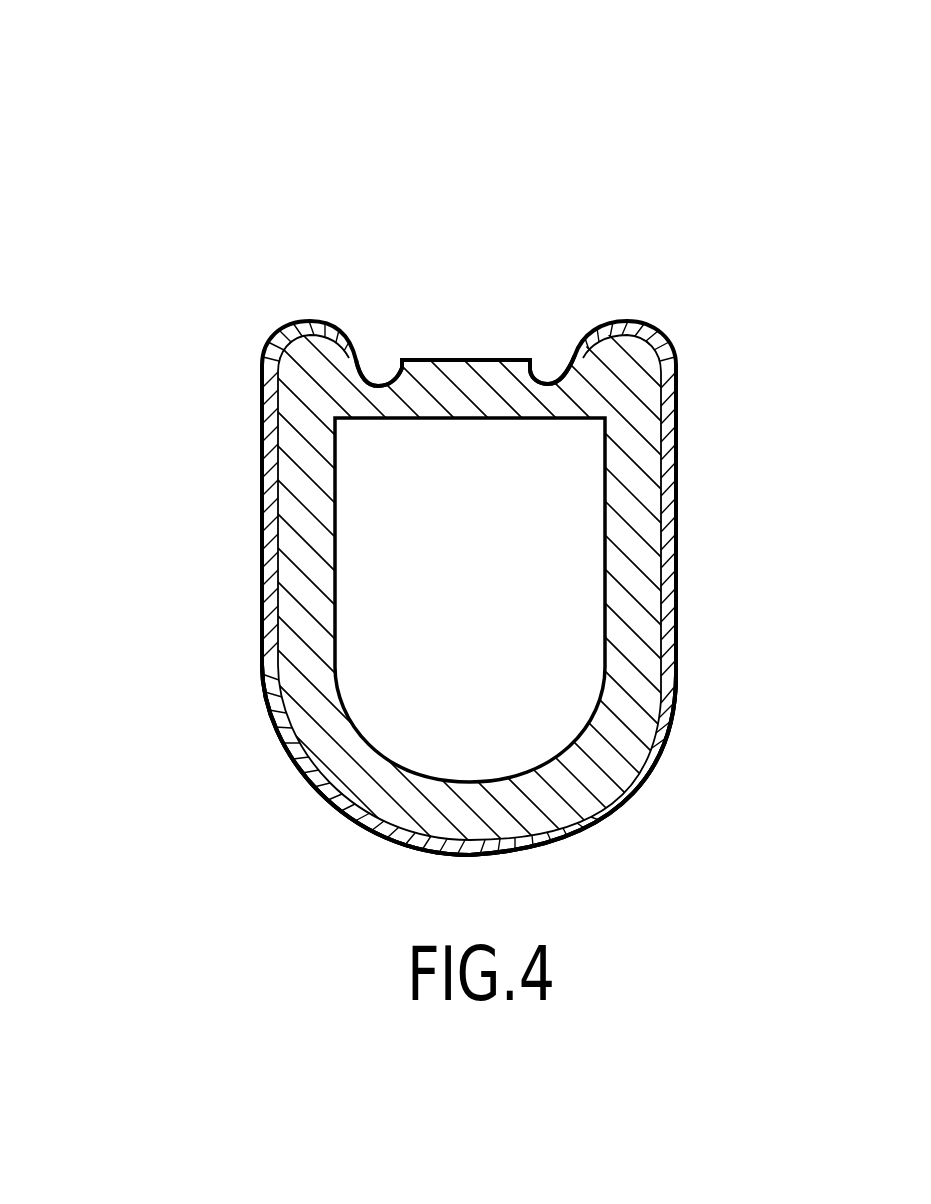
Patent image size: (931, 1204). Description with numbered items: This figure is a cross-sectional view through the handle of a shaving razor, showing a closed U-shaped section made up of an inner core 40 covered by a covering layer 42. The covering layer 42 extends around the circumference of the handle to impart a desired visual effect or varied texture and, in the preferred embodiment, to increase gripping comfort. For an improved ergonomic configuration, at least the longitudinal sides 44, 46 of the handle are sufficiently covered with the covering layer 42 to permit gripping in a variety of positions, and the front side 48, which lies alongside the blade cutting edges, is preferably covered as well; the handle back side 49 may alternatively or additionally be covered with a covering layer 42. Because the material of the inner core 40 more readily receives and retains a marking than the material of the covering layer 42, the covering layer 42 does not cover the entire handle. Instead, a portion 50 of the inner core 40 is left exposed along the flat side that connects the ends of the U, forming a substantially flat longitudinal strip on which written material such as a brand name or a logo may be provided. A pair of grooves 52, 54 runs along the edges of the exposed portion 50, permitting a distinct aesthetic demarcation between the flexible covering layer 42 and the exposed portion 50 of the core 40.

The inner core 40 is at (627, 438).
The covering layer 42 is at (672, 567).
The longitudinal side 44 is at (232, 691).
The longitudinal side 46 is at (705, 600).
The front side 48 is at (558, 877).
The handle back side 49 is at (418, 200).
The exposed portion 50 is at (451, 360).
The groove 52 is at (377, 385).
The groove 54 is at (557, 381).